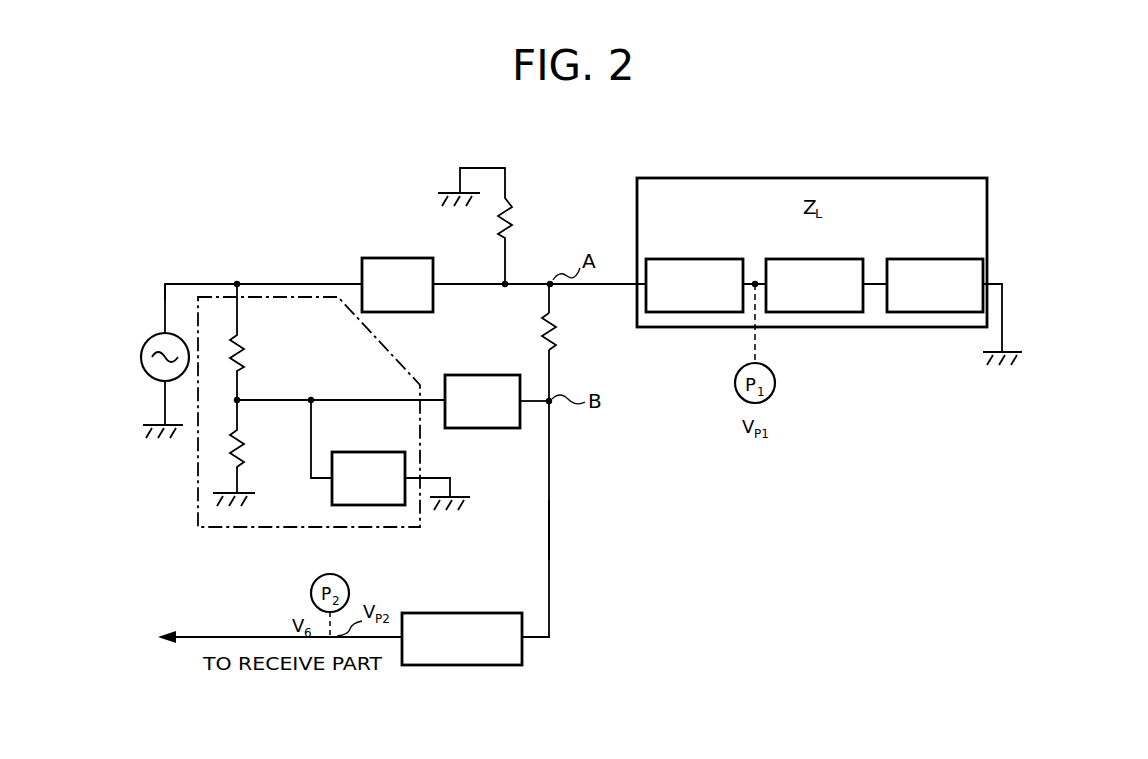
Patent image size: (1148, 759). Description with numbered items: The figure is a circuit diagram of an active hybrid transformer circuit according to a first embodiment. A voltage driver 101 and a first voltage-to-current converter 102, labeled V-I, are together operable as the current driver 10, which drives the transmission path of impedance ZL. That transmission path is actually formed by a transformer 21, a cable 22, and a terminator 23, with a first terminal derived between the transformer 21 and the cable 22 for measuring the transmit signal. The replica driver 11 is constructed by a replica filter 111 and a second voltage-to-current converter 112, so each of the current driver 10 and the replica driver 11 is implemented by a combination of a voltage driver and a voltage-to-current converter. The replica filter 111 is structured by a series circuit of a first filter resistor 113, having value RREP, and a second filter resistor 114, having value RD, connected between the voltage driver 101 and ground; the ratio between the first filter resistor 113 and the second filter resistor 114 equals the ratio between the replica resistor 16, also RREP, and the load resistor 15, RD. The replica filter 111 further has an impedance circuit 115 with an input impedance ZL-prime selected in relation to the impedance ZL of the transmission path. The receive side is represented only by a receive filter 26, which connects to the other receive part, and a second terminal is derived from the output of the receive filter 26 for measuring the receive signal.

The current driver 10 is at (195, 255).
The replica driver 11 is at (512, 540).
The load resistor 15 is at (518, 206).
The replica resistor 16 is at (540, 325).
The transformer 21 is at (697, 259).
The cable 22 is at (837, 259).
The terminator 23 is at (942, 259).
The receive filter 26 is at (489, 613).
The voltage driver 101 is at (160, 334).
The first voltage-to-current converter 102 is at (375, 258).
The replica filter 111 is at (197, 530).
The second voltage-to-current converter 112 is at (487, 428).
The first filter resistor 113 is at (246, 336).
The second filter resistor 114 is at (245, 465).
The impedance circuit 115 is at (357, 452).